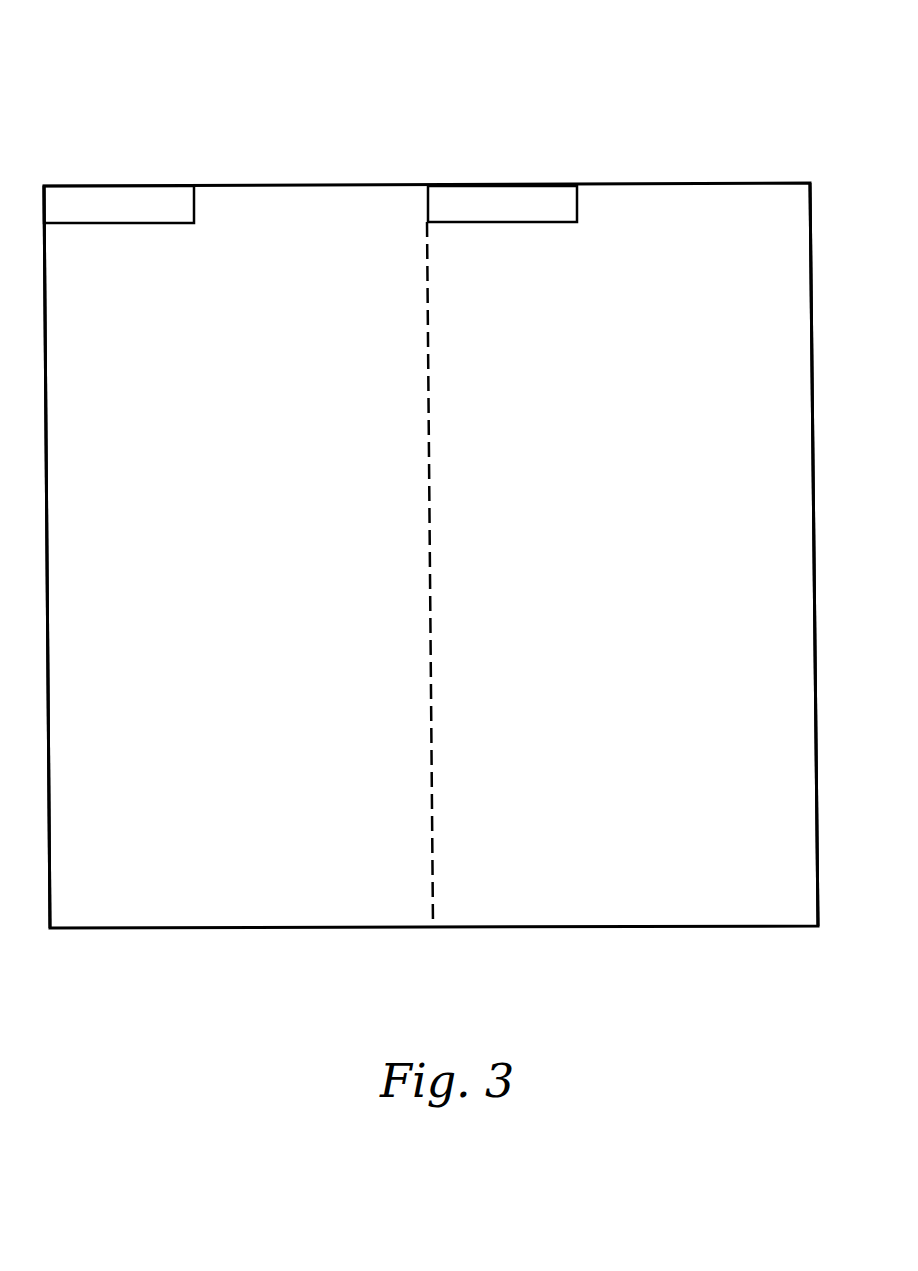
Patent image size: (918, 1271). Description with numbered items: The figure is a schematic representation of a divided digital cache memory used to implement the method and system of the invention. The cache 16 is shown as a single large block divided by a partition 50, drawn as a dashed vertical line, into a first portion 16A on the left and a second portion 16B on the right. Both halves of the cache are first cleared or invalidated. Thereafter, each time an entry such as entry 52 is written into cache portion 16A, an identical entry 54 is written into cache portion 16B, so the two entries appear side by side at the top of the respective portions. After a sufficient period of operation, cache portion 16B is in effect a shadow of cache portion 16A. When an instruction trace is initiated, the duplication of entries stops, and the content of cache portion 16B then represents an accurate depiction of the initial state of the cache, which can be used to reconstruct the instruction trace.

The cache 16 is at (766, 118).
The first cache portion 16A is at (120, 928).
The second cache portion 16B is at (745, 926).
The partition 50 is at (430, 553).
The entry 52 is at (147, 223).
The entry 54 is at (528, 222).